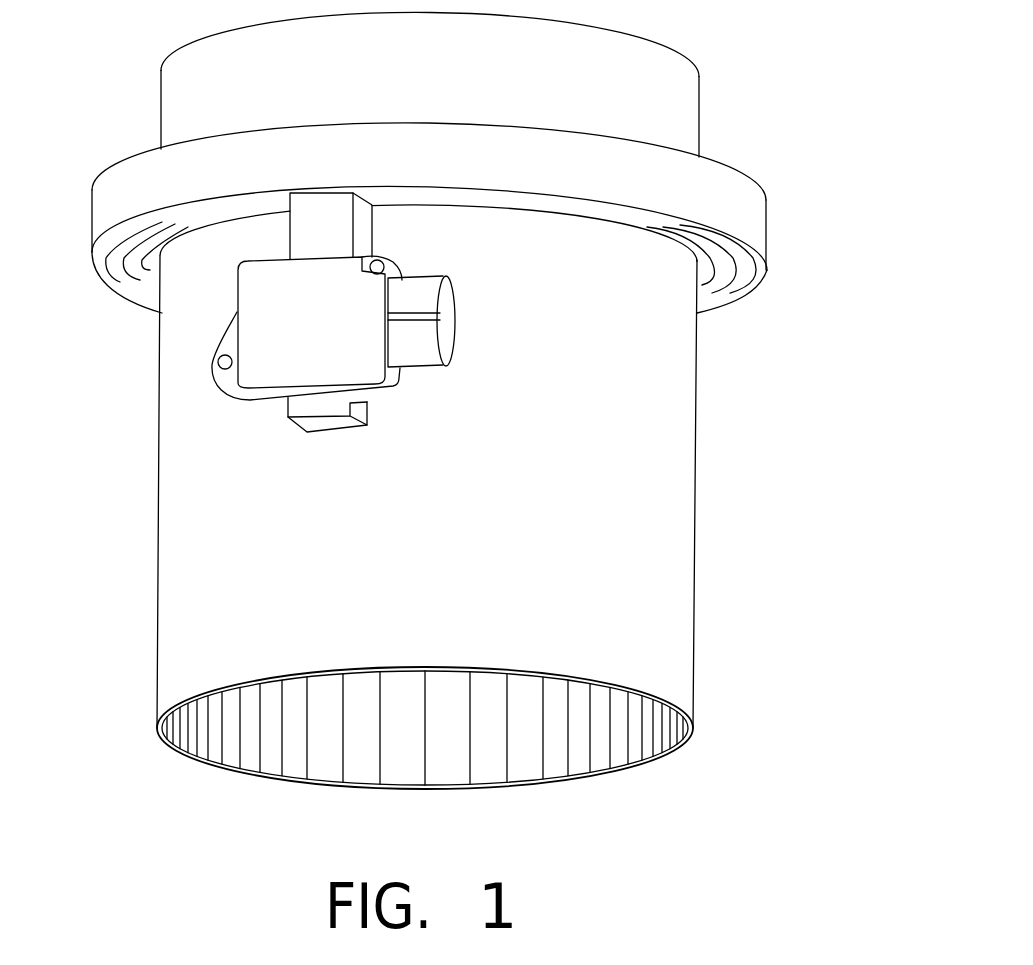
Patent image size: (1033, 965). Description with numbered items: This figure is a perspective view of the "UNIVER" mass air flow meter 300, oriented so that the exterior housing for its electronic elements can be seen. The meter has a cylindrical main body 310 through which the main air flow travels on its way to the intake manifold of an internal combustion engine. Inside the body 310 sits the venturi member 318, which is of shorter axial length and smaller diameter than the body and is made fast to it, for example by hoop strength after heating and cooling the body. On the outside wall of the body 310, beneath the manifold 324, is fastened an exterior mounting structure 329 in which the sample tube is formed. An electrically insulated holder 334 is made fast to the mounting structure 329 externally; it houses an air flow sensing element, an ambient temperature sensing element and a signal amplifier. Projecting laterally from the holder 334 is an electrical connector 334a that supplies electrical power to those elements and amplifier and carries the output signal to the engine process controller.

The mass air flow meter 300 is at (477, 425).
The main body 310 is at (693, 482).
The venturi member 318 is at (588, 730).
The manifold 324 is at (767, 238).
The exterior mounting structure 329 is at (322, 238).
The electrically insulated holder 334 is at (330, 353).
The electrical connector 334a is at (418, 328).